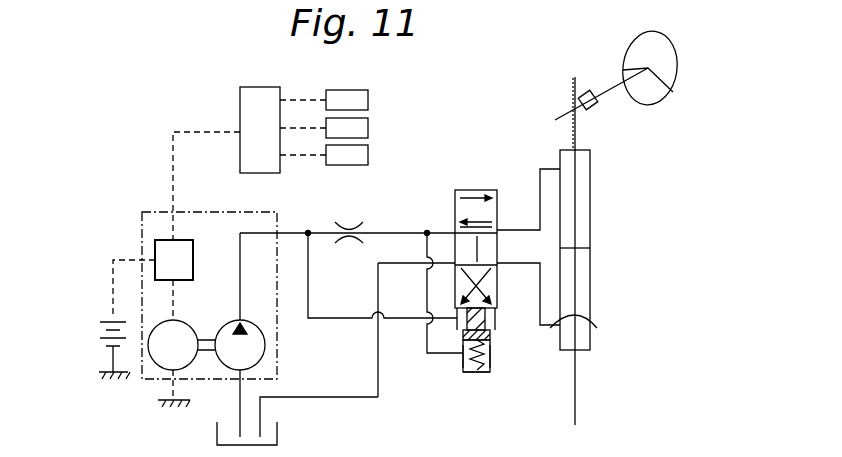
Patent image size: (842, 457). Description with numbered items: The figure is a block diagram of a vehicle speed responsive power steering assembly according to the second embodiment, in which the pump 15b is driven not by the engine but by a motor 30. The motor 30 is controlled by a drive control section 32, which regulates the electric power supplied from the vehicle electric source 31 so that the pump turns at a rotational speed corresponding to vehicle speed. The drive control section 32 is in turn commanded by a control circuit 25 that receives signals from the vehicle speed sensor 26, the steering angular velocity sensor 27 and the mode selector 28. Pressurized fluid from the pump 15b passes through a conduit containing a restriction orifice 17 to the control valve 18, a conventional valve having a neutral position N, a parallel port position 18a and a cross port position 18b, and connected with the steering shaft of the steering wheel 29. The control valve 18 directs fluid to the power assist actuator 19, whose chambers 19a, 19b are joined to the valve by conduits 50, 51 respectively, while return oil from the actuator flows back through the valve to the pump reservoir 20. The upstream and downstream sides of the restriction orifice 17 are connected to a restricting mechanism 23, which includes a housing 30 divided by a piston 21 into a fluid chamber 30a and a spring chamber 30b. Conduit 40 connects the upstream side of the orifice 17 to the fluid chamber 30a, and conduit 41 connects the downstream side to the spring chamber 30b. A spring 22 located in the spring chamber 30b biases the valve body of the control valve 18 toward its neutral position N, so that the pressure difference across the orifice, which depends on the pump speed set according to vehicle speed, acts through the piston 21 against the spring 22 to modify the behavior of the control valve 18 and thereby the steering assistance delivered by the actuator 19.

The control circuit 25 is at (226, 163).
The vehicle speed sensor 26 is at (368, 100).
The steering angular velocity sensor 27 is at (368, 128).
The mode selector 28 is at (368, 155).
The drive control section 32 is at (174, 323).
The vehicle electric source 31 is at (98, 331).
The motor 30 is at (187, 321).
The pump 15b is at (265, 345).
The pump reservoir 20 is at (277, 430).
The restriction orifice 17 is at (352, 222).
The conduit 40 is at (350, 322).
The conduit 41 is at (426, 346).
The control valve 18 is at (479, 190).
The parallel port position 18a is at (511, 212).
The neutral position N is at (497, 248).
The cross port position 18b is at (511, 283).
The fluid chamber 30a is at (497, 320).
The piston 21 is at (490, 336).
The spring chamber 30b is at (492, 352).
The spring 22 is at (489, 373).
The restricting mechanism 23 is at (487, 373).
The conduit 50 is at (543, 168).
The power assist actuator 19 is at (590, 232).
The chamber 19a is at (585, 177).
The chamber 19b is at (585, 300).
The conduit 51 is at (597, 328).
The steering wheel 29 is at (668, 103).